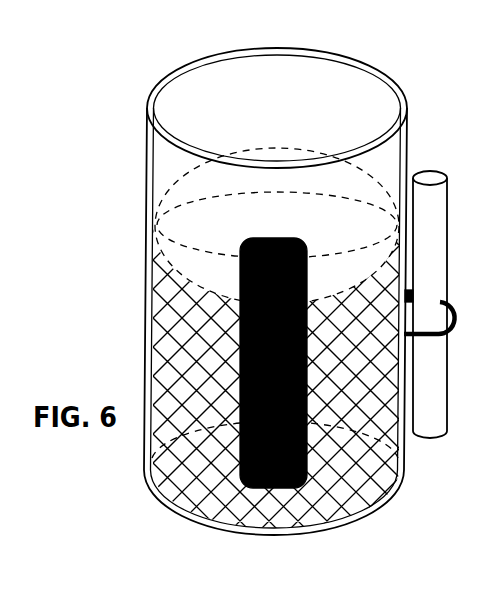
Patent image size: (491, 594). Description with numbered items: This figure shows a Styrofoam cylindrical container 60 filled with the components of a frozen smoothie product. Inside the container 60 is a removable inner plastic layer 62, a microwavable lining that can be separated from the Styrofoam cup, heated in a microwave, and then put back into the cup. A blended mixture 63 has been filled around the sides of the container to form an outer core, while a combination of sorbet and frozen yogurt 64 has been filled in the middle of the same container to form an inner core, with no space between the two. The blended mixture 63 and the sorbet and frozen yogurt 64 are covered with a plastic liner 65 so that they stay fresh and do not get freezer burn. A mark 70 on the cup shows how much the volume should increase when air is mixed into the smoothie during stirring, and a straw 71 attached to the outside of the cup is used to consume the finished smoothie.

The Styrofoam cylindrical container 60 is at (148, 102).
The removable inner plastic layer 62 is at (154, 160).
The blended mixture 63 is at (183, 353).
The sorbet and frozen yogurt 64 is at (240, 323).
The plastic liner 65 is at (177, 262).
The mark 70 is at (177, 199).
The straw 71 is at (430, 178).